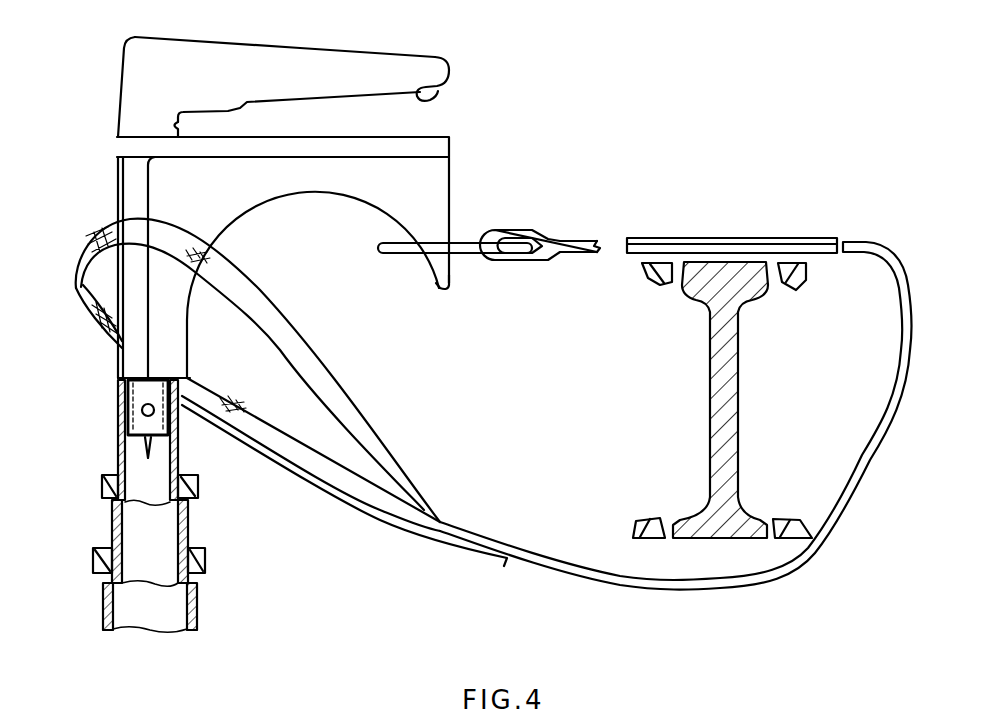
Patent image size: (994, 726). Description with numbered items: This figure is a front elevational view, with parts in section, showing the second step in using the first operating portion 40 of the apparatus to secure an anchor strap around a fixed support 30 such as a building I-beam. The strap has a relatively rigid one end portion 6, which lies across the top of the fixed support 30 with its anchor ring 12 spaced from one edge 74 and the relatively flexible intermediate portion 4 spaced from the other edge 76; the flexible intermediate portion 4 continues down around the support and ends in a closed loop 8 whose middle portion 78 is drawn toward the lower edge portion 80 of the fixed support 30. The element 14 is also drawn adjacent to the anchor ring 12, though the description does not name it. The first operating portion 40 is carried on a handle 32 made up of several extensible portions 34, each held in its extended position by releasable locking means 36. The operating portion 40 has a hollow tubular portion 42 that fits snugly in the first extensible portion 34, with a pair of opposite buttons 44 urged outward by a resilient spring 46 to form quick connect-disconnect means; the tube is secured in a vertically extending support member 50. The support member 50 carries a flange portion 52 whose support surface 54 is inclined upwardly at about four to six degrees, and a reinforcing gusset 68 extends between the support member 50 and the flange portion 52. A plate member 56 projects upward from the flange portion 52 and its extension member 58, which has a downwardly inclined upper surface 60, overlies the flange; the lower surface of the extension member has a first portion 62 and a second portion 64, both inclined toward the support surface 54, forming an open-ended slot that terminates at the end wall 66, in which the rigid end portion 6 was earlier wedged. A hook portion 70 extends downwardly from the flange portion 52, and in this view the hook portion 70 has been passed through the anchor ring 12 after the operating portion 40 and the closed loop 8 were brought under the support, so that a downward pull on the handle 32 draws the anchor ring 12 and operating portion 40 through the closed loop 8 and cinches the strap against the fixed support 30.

The relatively flexible intermediate portion 4 is at (880, 440).
The relatively rigid one end portion 6 is at (653, 237).
The closed loop 8 is at (360, 413).
The anchor ring 12 is at (390, 255).
The link connector 14 is at (572, 237).
The fixed support 30 is at (708, 368).
The handle 32 is at (262, 590).
The extensible portions 34 is at (190, 523).
The releasable locking means 36 is at (197, 488).
The first operating portion 40 is at (478, 147).
The hollow tubular portion 42 is at (140, 427).
The buttons 44 is at (140, 402).
The resilient spring 46 is at (147, 448).
The vertically extending support member 50 is at (182, 355).
The flange portion 52 is at (423, 147).
The support surface 54 is at (371, 132).
The plate member 56 is at (131, 85).
The extension member 58 is at (244, 43).
The downwardly inclined upper surface 60 is at (378, 56).
The first portion 62 is at (451, 95).
The second portion 64 is at (228, 110).
The end wall 66 is at (173, 127).
The reinforcing gusset 68 is at (137, 190).
The hook portion 70 is at (440, 280).
The one edge 74 is at (642, 267).
The other edge 76 is at (800, 280).
The middle portion 78 is at (82, 292).
The lower edge portion 80 is at (644, 520).